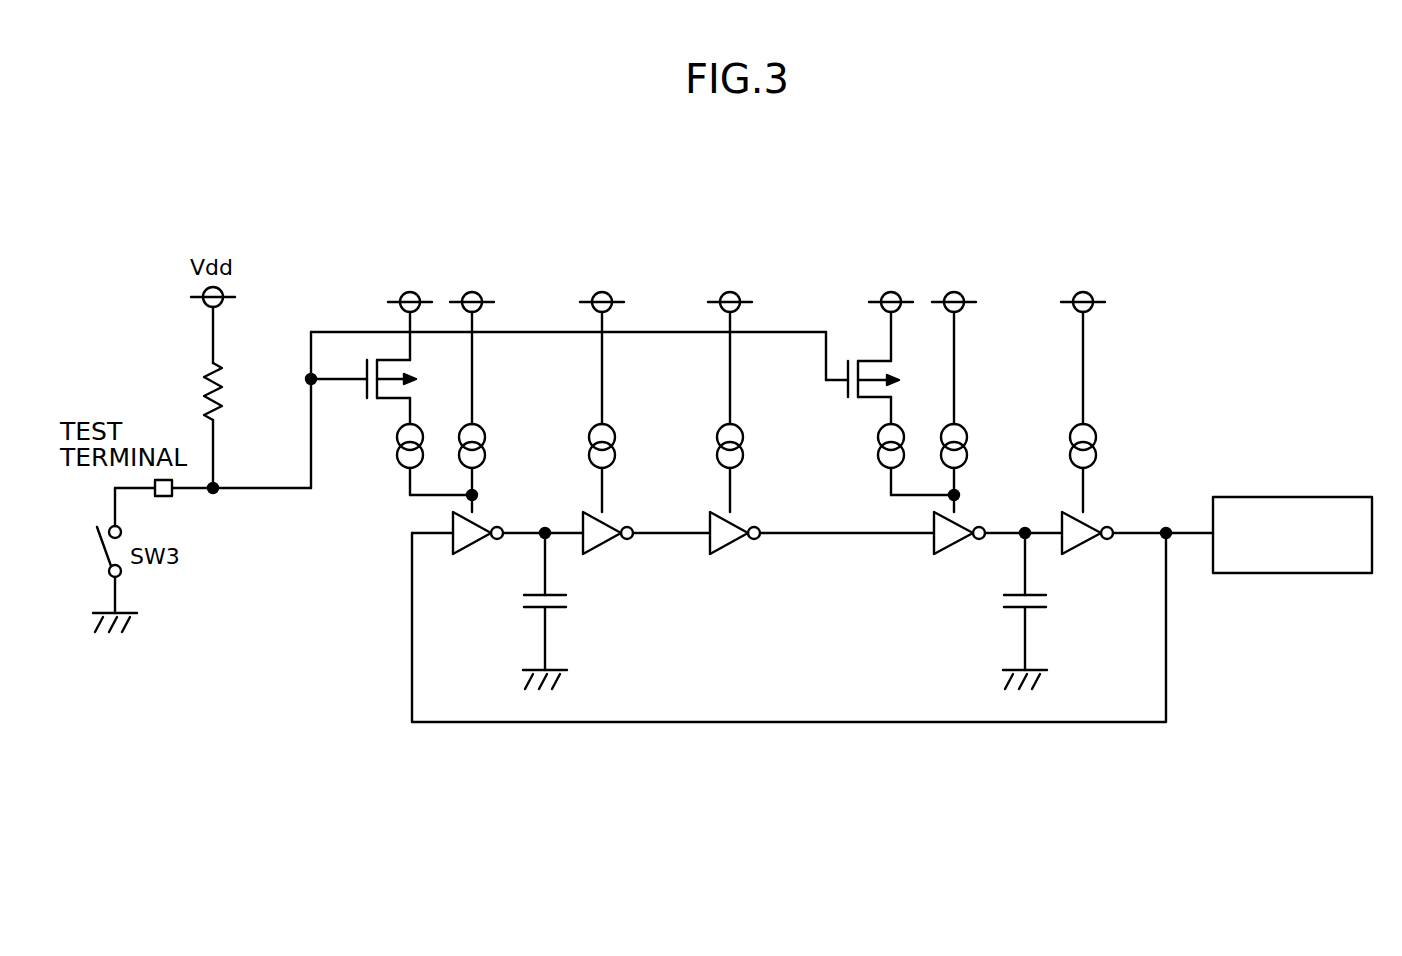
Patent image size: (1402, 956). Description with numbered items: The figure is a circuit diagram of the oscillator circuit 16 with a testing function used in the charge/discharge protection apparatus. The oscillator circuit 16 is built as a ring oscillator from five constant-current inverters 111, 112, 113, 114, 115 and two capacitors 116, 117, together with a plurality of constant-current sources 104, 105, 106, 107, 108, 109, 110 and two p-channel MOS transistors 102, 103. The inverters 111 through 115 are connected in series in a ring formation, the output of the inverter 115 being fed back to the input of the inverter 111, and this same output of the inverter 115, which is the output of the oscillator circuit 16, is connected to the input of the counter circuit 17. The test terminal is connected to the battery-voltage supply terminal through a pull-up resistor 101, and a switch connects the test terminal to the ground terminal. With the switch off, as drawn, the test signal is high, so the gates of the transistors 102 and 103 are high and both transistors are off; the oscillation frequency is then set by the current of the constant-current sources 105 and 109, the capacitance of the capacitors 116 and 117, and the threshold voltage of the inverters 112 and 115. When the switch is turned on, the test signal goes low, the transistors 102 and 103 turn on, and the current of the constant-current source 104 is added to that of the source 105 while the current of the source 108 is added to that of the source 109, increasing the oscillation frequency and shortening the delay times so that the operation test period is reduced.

The oscillator circuit 16 is at (932, 259).
The counter circuit 17 is at (1307, 496).
The pull-up resistor 101 is at (243, 391).
The p-channel MOS transistor 102 is at (416, 379).
The p-channel MOS transistor 103 is at (899, 379).
The constant-current source 104 is at (385, 446).
The constant-current source 105 is at (501, 446).
The constant-current source 106 is at (631, 446).
The constant-current source 107 is at (759, 446).
The constant-current source 108 is at (867, 446).
The constant-current source 109 is at (983, 446).
The constant-current source 110 is at (1112, 446).
The constant-current inverter 111 is at (492, 544).
The constant-current inverter 112 is at (622, 544).
The constant-current inverter 113 is at (749, 544).
The constant-current inverter 114 is at (973, 544).
The constant-current inverter 115 is at (1101, 545).
The capacitor 116 is at (573, 611).
The capacitor 117 is at (1054, 611).